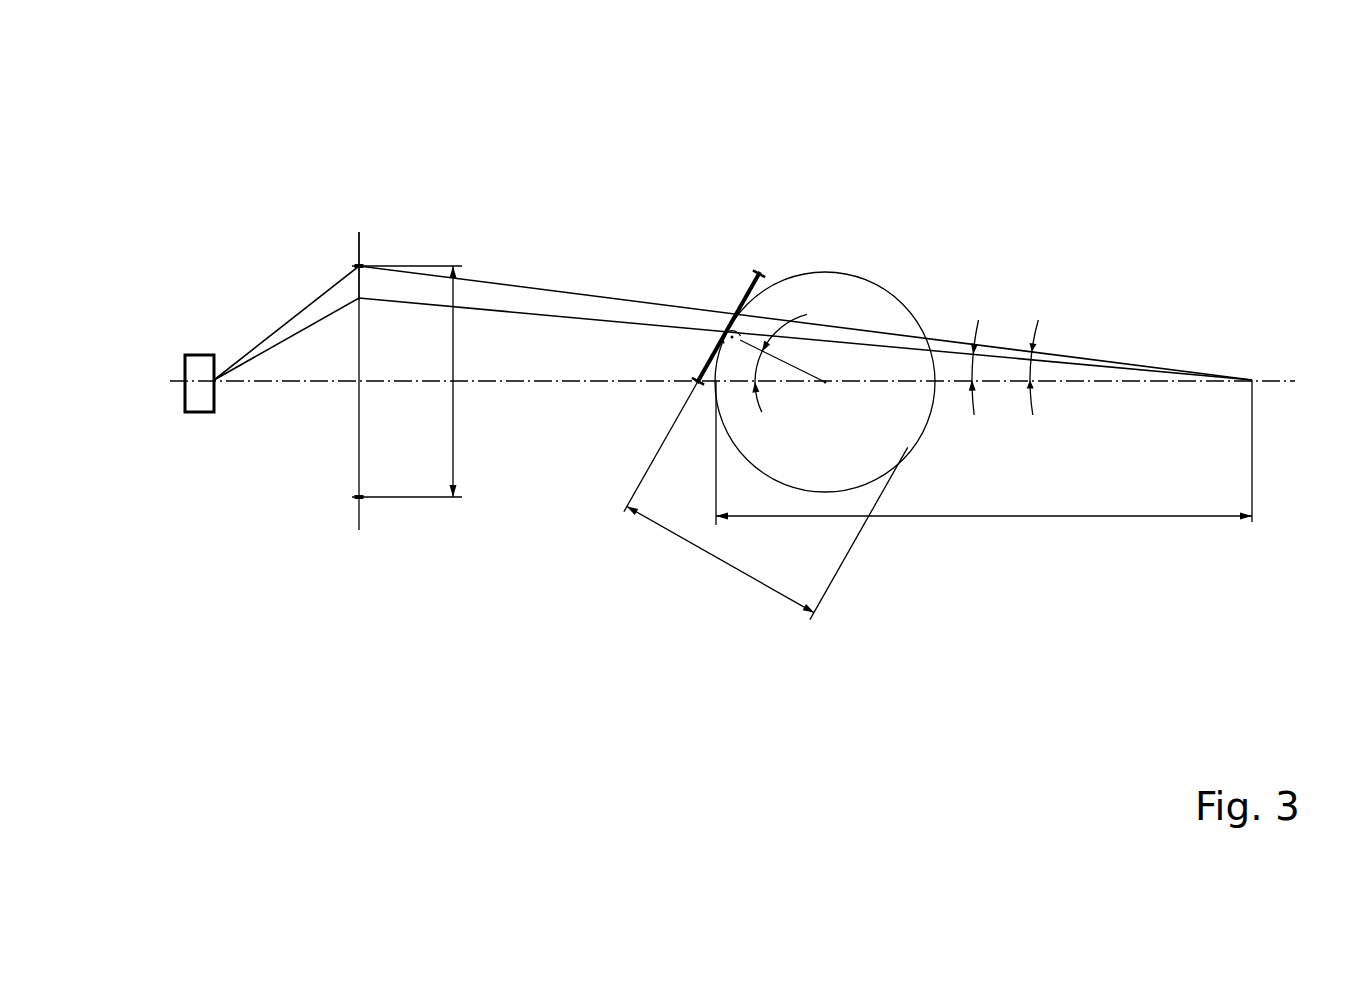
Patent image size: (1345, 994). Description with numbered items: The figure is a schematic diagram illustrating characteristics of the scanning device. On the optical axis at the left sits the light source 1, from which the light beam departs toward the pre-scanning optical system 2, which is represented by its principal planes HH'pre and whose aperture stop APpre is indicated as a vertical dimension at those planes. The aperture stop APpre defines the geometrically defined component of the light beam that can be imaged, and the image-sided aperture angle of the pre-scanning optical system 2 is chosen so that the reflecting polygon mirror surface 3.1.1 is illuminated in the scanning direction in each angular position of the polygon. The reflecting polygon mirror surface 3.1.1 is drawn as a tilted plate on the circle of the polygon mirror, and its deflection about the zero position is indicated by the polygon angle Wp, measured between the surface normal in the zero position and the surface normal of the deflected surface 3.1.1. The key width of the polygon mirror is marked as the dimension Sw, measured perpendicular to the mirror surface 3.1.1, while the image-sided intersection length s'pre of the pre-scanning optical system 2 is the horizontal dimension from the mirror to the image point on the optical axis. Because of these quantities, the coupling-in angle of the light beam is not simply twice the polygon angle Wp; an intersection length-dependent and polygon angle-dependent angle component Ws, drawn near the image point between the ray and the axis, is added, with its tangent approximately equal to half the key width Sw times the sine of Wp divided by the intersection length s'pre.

The light source 1 is at (203, 400).
The pre-scanning optical system 2 is at (355, 453).
The reflecting polygon mirror surface 3.1.1 is at (749, 291).
The principal planes of the pre-scanning optical system HH'pre is at (286, 182).
The aperture stop of the pre-scanning optical system APpre is at (455, 402).
The polygon angle Wp is at (793, 318).
The intersection length-dependent and polygon angle-dependent angle component Ws is at (970, 372).
The key width of the polygon mirror Sw is at (766, 501).
The image-sided intersection length of the pre-scanning optical system s'pre is at (984, 470).